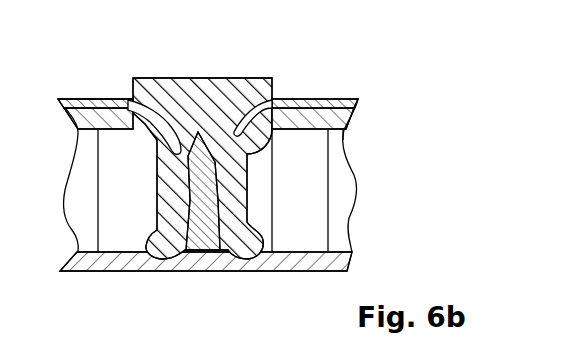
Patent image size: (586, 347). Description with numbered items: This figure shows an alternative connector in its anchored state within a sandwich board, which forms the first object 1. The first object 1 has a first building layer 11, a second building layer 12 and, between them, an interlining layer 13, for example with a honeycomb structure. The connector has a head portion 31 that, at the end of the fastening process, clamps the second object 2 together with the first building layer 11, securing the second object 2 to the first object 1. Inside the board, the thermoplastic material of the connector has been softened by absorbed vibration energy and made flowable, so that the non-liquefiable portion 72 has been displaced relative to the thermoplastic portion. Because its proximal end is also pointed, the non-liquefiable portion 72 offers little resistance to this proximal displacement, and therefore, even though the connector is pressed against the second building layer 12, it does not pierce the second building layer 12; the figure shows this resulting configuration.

The first object 1 is at (371, 152).
The second object 2 is at (94, 104).
The first building layer 11 is at (73, 99).
The second building layer 12 is at (97, 272).
The interlining layer 13 is at (333, 200).
The head portion 31 is at (243, 110).
The non-liquefiable portion 72 is at (207, 155).